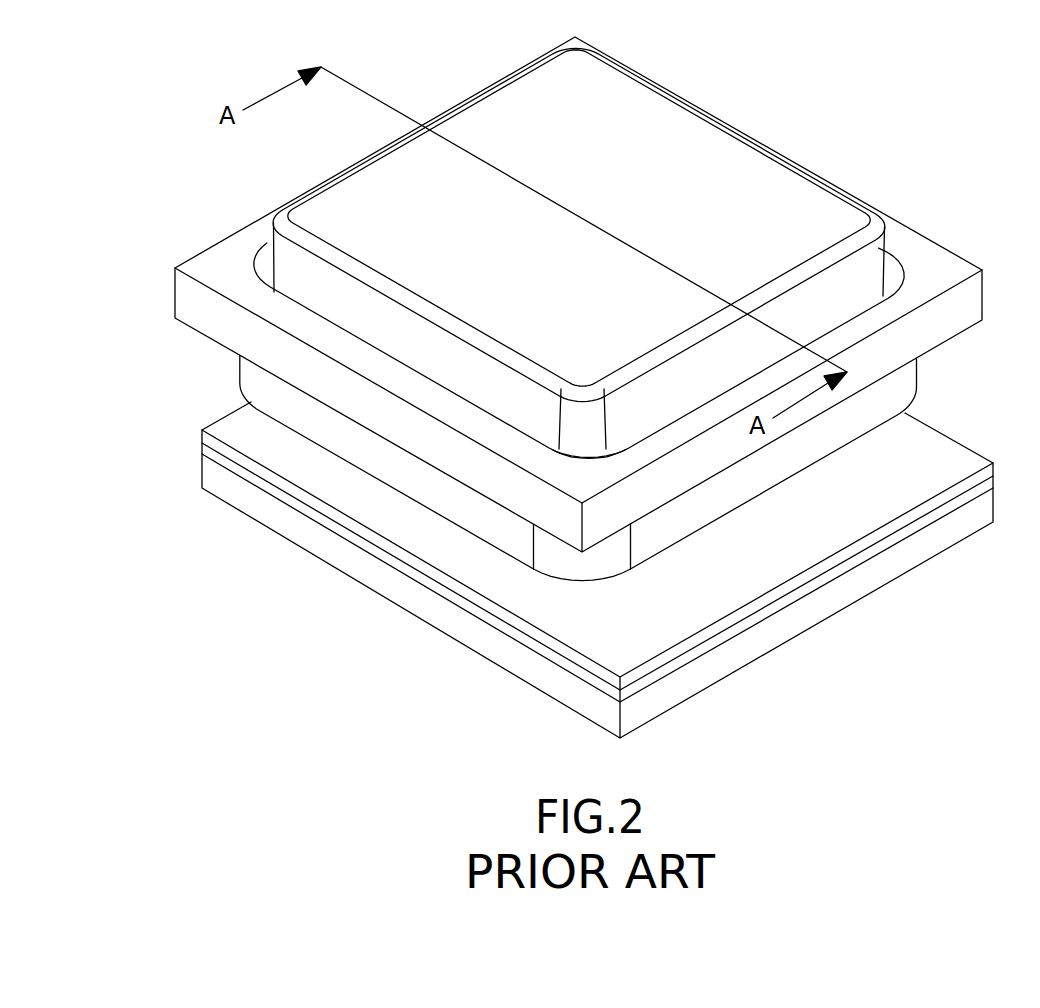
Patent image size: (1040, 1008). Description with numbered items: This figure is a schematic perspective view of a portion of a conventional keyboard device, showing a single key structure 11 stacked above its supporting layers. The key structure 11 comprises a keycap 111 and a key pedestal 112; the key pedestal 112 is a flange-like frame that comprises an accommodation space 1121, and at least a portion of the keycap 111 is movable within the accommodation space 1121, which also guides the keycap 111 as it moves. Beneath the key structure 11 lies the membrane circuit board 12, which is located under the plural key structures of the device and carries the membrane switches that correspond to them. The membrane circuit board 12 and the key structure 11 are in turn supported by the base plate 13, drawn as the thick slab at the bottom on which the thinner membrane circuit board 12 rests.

The button 11 is at (589, 309).
The cap 111 is at (647, 103).
The flange 112 is at (589, 294).
The recess 1121 is at (888, 276).
The plate 12 is at (942, 524).
The base 13 is at (898, 576).